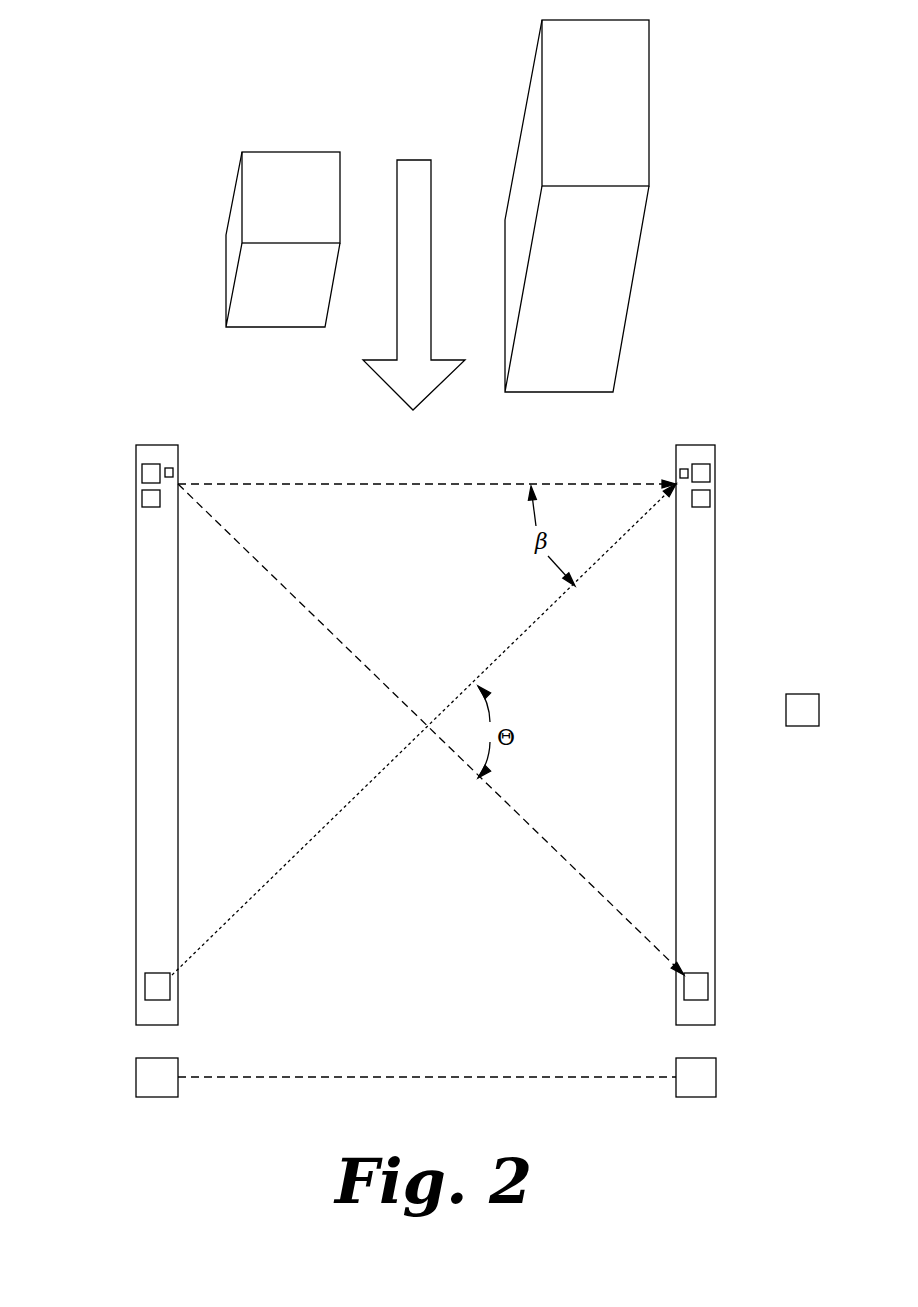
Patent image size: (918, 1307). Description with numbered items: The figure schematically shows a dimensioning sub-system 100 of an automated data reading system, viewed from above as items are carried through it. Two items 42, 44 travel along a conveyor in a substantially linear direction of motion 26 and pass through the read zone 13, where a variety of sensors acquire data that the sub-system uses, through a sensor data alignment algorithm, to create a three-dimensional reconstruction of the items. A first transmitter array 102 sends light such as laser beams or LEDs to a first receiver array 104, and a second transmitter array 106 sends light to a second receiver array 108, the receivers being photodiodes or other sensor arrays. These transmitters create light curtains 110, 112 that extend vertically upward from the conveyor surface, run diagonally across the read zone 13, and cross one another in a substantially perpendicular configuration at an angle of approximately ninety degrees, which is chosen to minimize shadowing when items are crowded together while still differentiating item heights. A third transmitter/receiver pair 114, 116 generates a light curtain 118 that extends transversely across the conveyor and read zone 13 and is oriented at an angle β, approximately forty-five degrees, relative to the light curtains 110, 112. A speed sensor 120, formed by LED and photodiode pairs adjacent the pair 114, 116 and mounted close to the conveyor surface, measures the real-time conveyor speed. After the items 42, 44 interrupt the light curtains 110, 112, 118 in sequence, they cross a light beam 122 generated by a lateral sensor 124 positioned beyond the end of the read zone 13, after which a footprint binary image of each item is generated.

The dimensioning sub-system 100 is at (85, 232).
The read zone 13 is at (270, 740).
The direction of motion 26 is at (418, 160).
The item 42 is at (268, 152).
The item 44 is at (649, 135).
The first transmitter array 102 is at (142, 497).
The first receiver array 104 is at (708, 986).
The second transmitter array 106 is at (145, 985).
The second receiver array 108 is at (710, 498).
The light curtain 110 is at (540, 852).
The light curtain 112 is at (535, 628).
The third transmitter 114 is at (142, 472).
The third receiver 116 is at (710, 473).
The light curtain 118 is at (422, 486).
The speed sensor 120 is at (168, 468).
The light beam 122 is at (490, 1076).
The lateral sensor 124 is at (716, 1080).